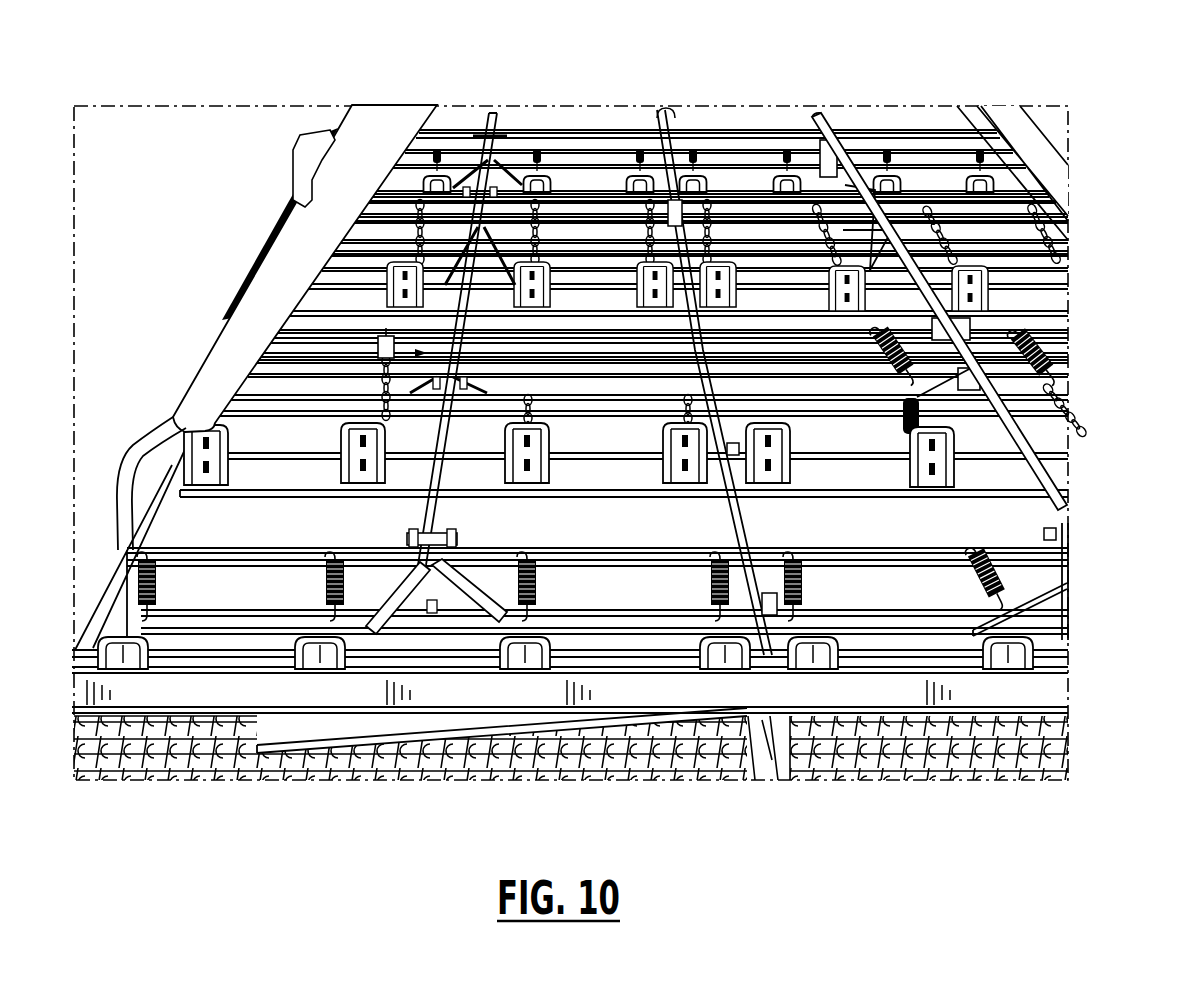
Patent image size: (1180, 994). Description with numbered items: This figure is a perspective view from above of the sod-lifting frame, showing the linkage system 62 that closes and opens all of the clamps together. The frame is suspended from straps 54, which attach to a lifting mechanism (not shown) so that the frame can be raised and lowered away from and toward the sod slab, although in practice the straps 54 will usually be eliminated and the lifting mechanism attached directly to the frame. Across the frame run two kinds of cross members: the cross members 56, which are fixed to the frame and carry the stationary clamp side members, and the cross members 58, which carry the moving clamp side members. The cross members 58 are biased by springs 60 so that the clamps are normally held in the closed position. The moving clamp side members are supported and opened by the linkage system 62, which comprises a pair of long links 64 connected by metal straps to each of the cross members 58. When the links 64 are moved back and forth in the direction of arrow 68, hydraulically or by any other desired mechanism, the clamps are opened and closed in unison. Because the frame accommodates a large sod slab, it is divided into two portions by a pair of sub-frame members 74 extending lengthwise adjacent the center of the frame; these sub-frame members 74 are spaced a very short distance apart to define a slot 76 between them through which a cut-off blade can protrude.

The strap 54 is at (385, 132).
The cross member 56 is at (1067, 585).
The cross member 58 is at (1028, 553).
The spring 60 is at (1065, 630).
The linkage system 62 is at (392, 352).
The long link 64 is at (376, 393).
The arrow 68 is at (503, 36).
The sub-frame member 74 is at (727, 533).
The slot 76 is at (752, 520).